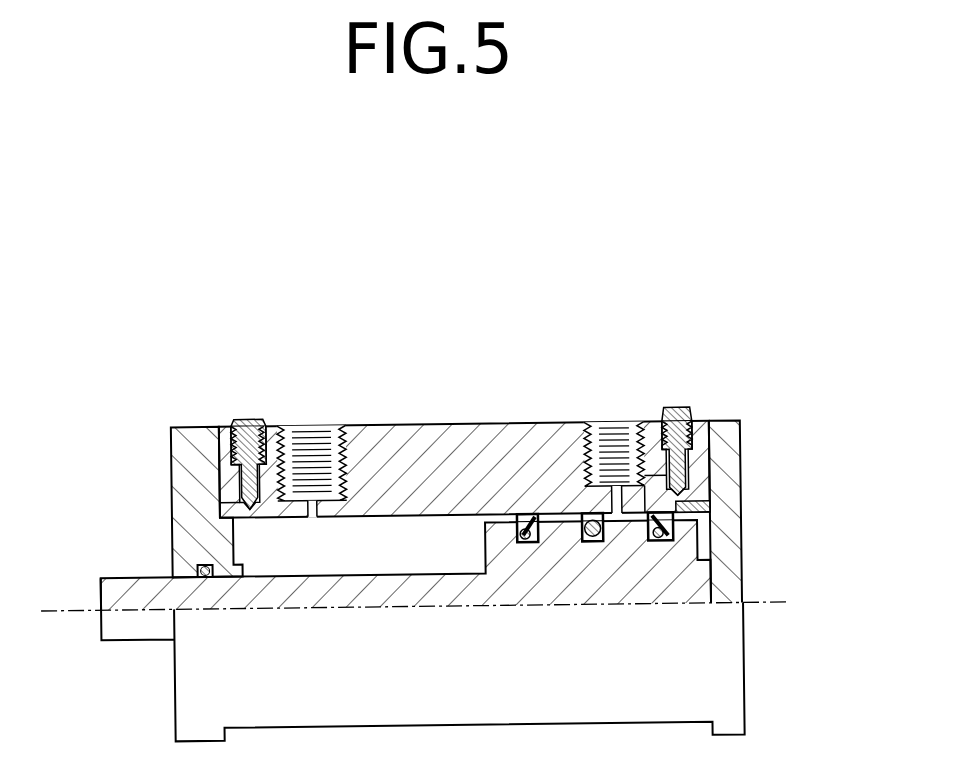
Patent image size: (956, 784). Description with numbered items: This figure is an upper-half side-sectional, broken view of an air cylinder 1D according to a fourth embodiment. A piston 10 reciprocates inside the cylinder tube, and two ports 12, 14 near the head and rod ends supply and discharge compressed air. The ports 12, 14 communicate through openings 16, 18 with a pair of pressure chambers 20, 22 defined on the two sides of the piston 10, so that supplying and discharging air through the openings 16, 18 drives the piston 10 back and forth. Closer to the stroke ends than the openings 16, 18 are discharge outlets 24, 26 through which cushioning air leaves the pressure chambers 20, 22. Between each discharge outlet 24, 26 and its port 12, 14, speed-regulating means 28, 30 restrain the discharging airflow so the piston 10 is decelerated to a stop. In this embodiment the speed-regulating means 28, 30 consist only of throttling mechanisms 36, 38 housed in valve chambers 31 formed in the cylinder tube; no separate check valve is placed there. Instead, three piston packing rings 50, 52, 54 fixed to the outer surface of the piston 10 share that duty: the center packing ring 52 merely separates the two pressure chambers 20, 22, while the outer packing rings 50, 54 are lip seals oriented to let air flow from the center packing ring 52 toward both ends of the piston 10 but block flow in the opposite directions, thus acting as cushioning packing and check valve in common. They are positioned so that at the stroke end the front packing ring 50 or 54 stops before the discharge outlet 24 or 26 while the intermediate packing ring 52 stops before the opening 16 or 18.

The air cylinder 1D is at (536, 280).
The piston 10 is at (687, 593).
The port 12 is at (615, 492).
The port 14 is at (307, 423).
The opening 16 is at (603, 426).
The opening 18 is at (327, 424).
The pressure chamber 20 is at (705, 556).
The pressure chamber 22 is at (437, 523).
The discharge outlet 24 is at (705, 510).
The discharge outlet 26 is at (232, 530).
The speed-regulating means 28 is at (682, 409).
The speed-regulating means 30 is at (247, 406).
The valve chamber 31 is at (206, 421).
The throttling mechanism 36 is at (693, 491).
The throttling mechanism 38 is at (236, 496).
The piston packing ring 50 is at (658, 545).
The center packing ring 52 is at (587, 545).
The piston packing ring 54 is at (517, 544).